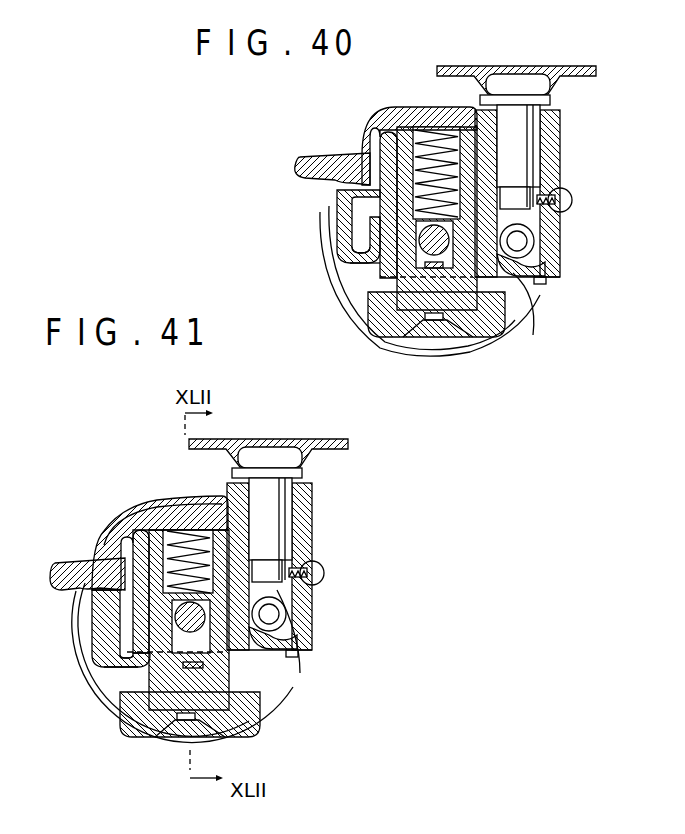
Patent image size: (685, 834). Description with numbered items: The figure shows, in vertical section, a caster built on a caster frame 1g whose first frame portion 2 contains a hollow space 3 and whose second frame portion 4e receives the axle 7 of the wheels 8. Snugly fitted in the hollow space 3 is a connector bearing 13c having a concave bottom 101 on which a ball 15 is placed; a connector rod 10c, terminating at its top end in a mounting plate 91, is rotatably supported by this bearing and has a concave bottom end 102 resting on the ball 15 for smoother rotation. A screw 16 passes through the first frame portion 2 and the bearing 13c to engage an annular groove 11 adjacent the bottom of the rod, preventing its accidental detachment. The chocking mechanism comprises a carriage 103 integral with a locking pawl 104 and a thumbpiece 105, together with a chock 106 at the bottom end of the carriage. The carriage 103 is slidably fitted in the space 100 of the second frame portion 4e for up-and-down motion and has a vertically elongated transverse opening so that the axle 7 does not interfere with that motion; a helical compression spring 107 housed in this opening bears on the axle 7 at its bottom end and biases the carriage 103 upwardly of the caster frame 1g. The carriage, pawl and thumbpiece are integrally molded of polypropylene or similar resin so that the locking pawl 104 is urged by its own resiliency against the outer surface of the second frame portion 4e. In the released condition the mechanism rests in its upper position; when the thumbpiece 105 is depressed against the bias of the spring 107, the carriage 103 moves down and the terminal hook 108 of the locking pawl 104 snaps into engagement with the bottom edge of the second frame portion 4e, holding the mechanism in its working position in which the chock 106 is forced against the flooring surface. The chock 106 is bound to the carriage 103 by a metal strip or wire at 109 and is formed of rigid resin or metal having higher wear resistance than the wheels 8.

In FIG. 40, the caster frame 1g is at (572, 110).
In FIG. 41, the caster frame 1g is at (264, 547).
In FIG. 40, the first frame portion 2 is at (560, 275).
In FIG. 41, the first frame portion 2 is at (318, 566).
In FIG. 40, the hollow space 3 is at (545, 283).
In FIG. 41, the hollow space 3 is at (295, 566).
In FIG. 40, the second frame portion 4e is at (386, 172).
In FIG. 41, the second frame portion 4e is at (109, 583).
In FIG. 40, the axle 7 is at (381, 263).
In FIG. 41, the axle 7 is at (176, 620).
In FIG. 40, the wheels 8 is at (357, 322).
In FIG. 41, the wheels 8 is at (164, 663).
In FIG. 40, the connector rod 10c is at (516, 113).
In FIG. 41, the connector rod 10c is at (267, 489).
In FIG. 40, the annular groove 11 is at (523, 185).
In FIG. 41, the annular groove 11 is at (317, 529).
In FIG. 40, the connector bearing 13c is at (540, 287).
In FIG. 41, the connector bearing 13c is at (329, 676).
In FIG. 40, the ball 15 is at (556, 258).
In FIG. 41, the ball 15 is at (306, 639).
In FIG. 40, the screw 16 is at (563, 203).
In FIG. 41, the screw 16 is at (331, 562).
In FIG. 40, the mounting plate 91 is at (583, 66).
In FIG. 41, the mounting plate 91 is at (271, 432).
In FIG. 40, the space 100 is at (371, 226).
In FIG. 41, the space 100 is at (79, 639).
In FIG. 40, the concave bottom 101 is at (508, 283).
In FIG. 41, the concave bottom 101 is at (304, 650).
In FIG. 40, the concave bottom end 102 is at (546, 229).
In FIG. 41, the concave bottom end 102 is at (313, 605).
In FIG. 40, the carriage 103 is at (445, 113).
In FIG. 41, the carriage 103 is at (160, 526).
In FIG. 40, the locking pawl 104 is at (358, 196).
In FIG. 41, the locking pawl 104 is at (87, 628).
In FIG. 40, the thumbpiece 105 is at (308, 165).
In FIG. 41, the thumbpiece 105 is at (70, 563).
In FIG. 40, the chock 106 is at (472, 337).
In FIG. 41, the chock 106 is at (215, 732).
In FIG. 40, the helical compression spring 107 is at (428, 128).
In FIG. 41, the helical compression spring 107 is at (178, 518).
In FIG. 40, the terminal hook 108 is at (372, 262).
In FIG. 41, the terminal hook 108 is at (96, 688).
In FIG. 40, the metal strip or wire 109 is at (433, 322).
In FIG. 41, the metal strip or wire 109 is at (177, 749).